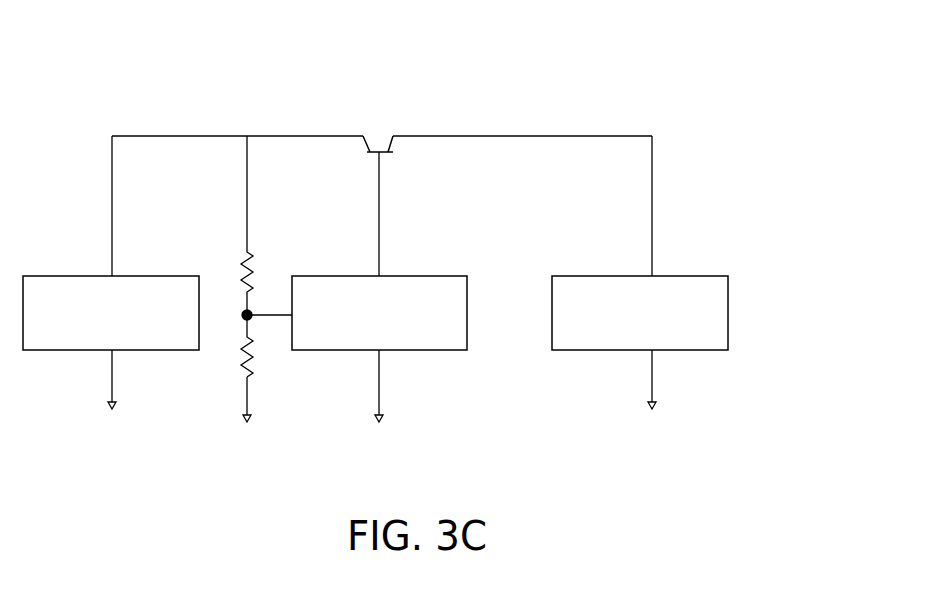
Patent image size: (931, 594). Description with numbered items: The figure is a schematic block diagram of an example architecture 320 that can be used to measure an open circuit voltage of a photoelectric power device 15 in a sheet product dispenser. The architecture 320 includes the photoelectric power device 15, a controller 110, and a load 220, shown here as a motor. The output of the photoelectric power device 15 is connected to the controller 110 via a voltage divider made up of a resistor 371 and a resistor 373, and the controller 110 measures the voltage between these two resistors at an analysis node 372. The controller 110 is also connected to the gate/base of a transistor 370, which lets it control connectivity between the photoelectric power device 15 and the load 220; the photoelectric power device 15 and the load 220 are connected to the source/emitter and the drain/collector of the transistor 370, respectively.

The photoelectric power device 15 is at (134, 276).
The controller 110 is at (387, 276).
The load 220 is at (693, 276).
The architecture 320 is at (718, 123).
The transistor 370 is at (388, 128).
The resistor 371 is at (257, 268).
The analysis node 372 is at (242, 321).
The resistor 373 is at (255, 357).